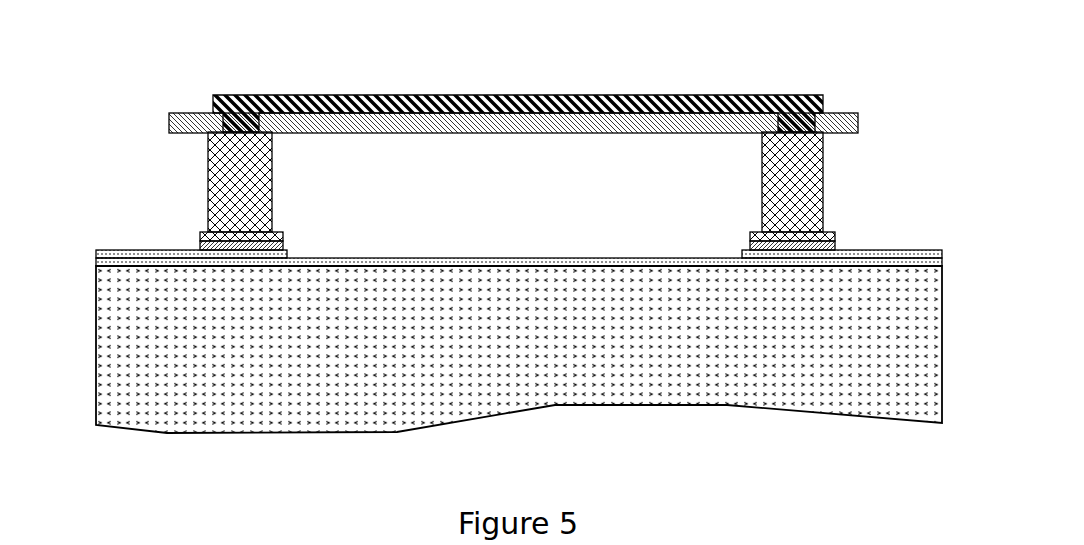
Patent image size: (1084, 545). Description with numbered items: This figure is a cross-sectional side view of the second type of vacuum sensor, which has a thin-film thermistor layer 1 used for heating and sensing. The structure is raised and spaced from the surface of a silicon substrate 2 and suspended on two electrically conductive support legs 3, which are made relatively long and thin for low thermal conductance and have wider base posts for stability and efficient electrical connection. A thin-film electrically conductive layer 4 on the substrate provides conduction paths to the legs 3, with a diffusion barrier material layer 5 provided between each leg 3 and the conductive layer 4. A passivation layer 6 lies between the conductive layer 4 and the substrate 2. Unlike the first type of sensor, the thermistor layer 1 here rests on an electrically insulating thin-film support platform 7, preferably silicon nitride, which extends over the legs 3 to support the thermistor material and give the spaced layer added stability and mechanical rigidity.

The thin-film thermistor layer 1 is at (413, 102).
The silicon substrate 2 is at (132, 392).
The electrically conductive support legs 3 is at (228, 182).
The thin-film electrically conductive layer 4 is at (165, 252).
The diffusion barrier material layer 5 is at (217, 243).
The passivation layer 6 is at (127, 264).
The electrically insulating thin-film support platform 7 is at (520, 125).